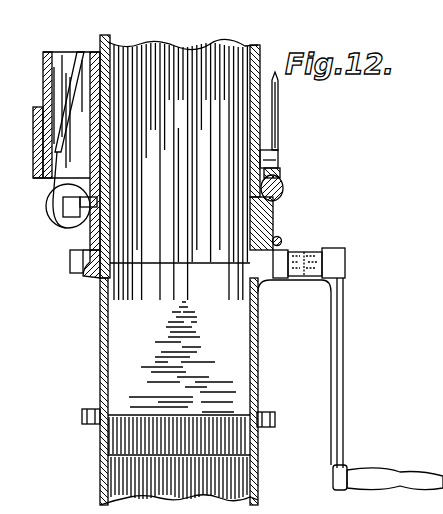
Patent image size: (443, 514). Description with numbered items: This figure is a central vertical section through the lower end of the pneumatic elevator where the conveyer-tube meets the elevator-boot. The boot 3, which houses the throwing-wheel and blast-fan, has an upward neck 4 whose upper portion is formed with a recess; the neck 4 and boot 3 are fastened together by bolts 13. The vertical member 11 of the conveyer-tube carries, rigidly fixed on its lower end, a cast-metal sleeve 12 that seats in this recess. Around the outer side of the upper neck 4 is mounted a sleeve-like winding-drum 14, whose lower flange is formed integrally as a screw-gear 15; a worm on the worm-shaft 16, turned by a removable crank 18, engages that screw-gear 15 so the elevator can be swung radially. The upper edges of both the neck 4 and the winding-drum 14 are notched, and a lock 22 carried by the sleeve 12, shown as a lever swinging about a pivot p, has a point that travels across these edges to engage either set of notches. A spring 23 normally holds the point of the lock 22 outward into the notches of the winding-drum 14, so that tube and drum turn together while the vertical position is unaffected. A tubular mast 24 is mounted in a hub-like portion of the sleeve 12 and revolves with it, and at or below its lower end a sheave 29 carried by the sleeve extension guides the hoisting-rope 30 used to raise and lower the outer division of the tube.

The boot 3 is at (259, 478).
The neck 4 is at (259, 358).
The vertical member 11 is at (183, 169).
The cast-metal sleeve 12 is at (252, 198).
The bolts 13 is at (86, 410).
The winding-drum 14 is at (275, 224).
The screw-gear 15 is at (72, 266).
The worm-shaft 16 is at (304, 278).
The removable crank 18 is at (345, 358).
The lock 22 is at (279, 155).
The spring 23 is at (286, 186).
The tubular mast 24 is at (43, 88).
The sheave 29 is at (58, 230).
The hoisting-rope 30 is at (80, 53).
The pivot p is at (279, 164).